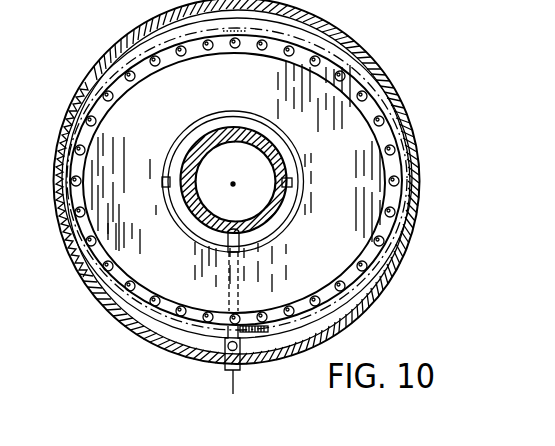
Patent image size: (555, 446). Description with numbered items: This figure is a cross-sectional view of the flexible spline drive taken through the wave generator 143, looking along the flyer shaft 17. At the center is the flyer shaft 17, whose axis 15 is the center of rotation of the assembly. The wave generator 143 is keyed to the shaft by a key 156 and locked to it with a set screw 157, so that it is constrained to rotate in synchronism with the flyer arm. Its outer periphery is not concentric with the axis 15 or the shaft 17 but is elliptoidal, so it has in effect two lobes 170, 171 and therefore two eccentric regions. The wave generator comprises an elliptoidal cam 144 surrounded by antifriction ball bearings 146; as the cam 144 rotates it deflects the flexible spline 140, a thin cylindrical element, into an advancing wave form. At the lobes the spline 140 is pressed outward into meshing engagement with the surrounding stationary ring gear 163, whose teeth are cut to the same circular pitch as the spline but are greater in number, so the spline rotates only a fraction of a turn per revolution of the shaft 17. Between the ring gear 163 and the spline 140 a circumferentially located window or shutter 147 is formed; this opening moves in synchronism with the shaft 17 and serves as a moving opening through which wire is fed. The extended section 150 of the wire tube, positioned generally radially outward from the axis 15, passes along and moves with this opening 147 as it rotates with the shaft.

The flexible spline 140 is at (92, 93).
The ring gear 163 is at (82, 265).
The window or shutter 147 is at (203, 341).
The wave generator 143 is at (165, 302).
The ball bearings 146 is at (236, 48).
The elliptoidal cam 144 is at (342, 100).
The lobe 170 is at (147, 210).
The lobe 171 is at (348, 220).
The set screw 157 is at (165, 178).
The key 156 is at (291, 180).
The flyer shaft 17 is at (197, 190).
The axis 15 is at (234, 183).
The extended section 150 is at (245, 343).